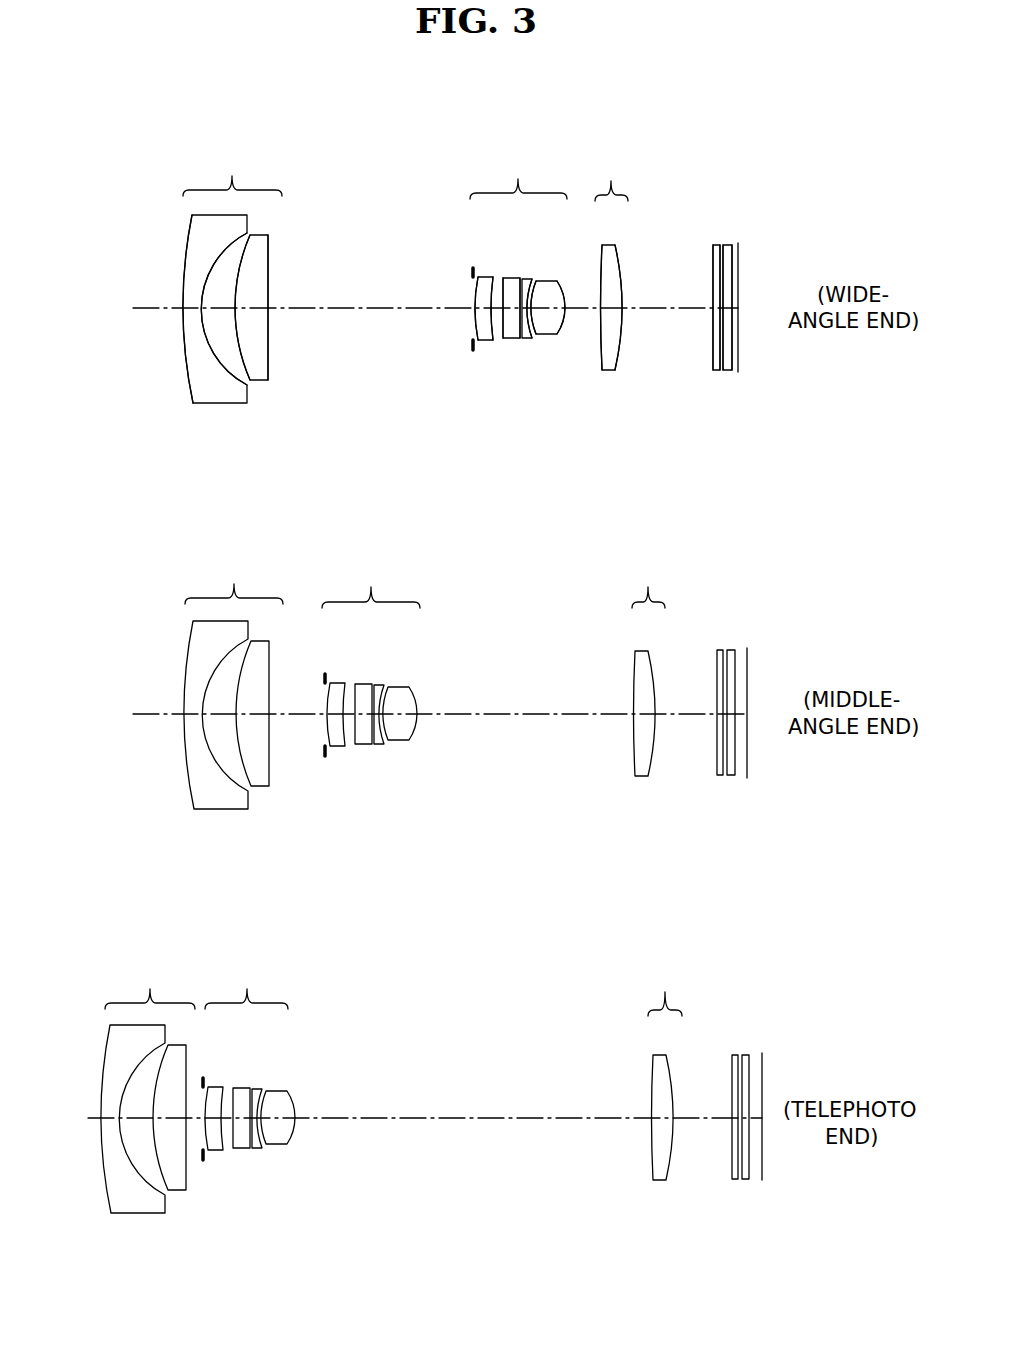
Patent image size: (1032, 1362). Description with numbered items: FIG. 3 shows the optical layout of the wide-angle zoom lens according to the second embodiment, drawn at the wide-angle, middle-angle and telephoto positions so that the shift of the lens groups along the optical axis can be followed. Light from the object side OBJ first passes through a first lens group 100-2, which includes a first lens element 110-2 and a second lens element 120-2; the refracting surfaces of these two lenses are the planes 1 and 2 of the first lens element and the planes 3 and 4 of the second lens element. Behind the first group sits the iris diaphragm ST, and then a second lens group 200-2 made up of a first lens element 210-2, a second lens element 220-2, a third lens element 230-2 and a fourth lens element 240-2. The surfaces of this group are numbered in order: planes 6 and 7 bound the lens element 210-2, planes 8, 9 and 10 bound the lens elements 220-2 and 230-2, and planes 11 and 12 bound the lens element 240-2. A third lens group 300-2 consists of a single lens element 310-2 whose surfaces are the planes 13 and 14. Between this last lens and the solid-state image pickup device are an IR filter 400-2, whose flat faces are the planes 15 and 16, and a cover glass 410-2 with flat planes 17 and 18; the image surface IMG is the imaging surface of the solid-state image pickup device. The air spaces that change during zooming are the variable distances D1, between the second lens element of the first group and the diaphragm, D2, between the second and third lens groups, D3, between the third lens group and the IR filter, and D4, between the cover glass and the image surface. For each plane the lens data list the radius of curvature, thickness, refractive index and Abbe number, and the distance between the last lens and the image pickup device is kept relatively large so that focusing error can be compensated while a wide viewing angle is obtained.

The first lens group 100-2 is at (194, 578).
The first lens element 110-2 is at (212, 398).
The second lens element 120-2 is at (258, 380).
The second lens group 200-2 is at (386, 581).
The first lens element 210-2 is at (483, 340).
The second lens element 220-2 is at (508, 338).
The third lens element 230-2 is at (528, 337).
The fourth lens element 240-2 is at (550, 335).
The third lens group 300-2 is at (638, 584).
The lens element 310-2 is at (610, 370).
The IR filter 400-2 is at (713, 245).
The cover glass 410-2 is at (728, 243).
The lens surface 1 is at (187, 343).
The lens surface 2 is at (200, 320).
The lens surface 3 is at (237, 293).
The lens surface 4 is at (268, 297).
The lens surface 6 is at (477, 297).
The lens surface 7 is at (490, 300).
The lens surface 8 is at (505, 310).
The lens surface 9 is at (520, 317).
The lens surface 10 is at (535, 283).
The lens surface 11 is at (538, 297).
The lens surface 12 is at (565, 293).
The lens surface 13 is at (603, 290).
The lens surface 14 is at (623, 293).
The filter surface 15 is at (714, 262).
The filter surface 16 is at (720, 278).
The cover glass surface 17 is at (724, 292).
The cover glass surface 18 is at (733, 303).
The iris diaphragm ST is at (473, 268).
The object side OBJ is at (79, 713).
The image surface IMG is at (740, 350).
The variable distance D1 is at (365, 310).
The variable distance D2 is at (582, 310).
The variable distance D3 is at (668, 310).
The variable distance D4 is at (740, 310).